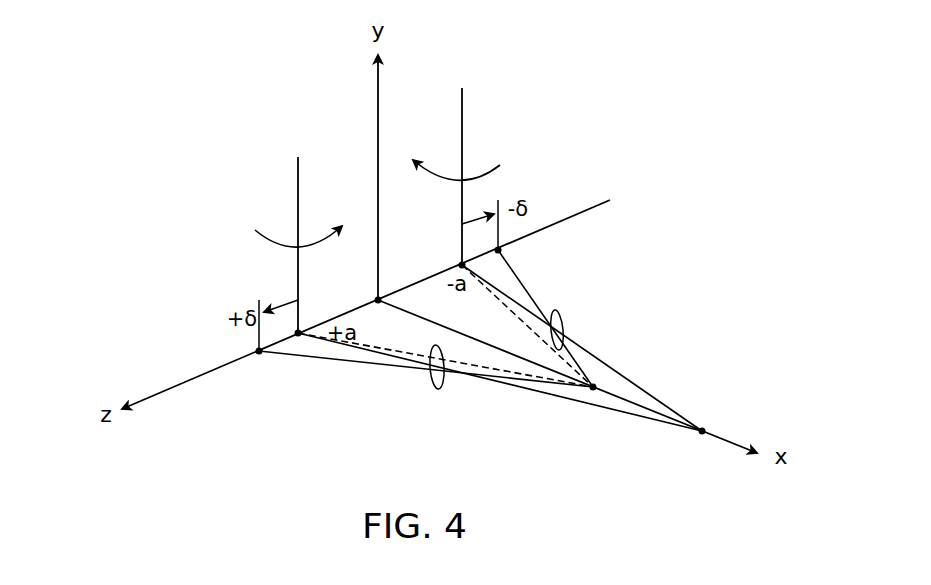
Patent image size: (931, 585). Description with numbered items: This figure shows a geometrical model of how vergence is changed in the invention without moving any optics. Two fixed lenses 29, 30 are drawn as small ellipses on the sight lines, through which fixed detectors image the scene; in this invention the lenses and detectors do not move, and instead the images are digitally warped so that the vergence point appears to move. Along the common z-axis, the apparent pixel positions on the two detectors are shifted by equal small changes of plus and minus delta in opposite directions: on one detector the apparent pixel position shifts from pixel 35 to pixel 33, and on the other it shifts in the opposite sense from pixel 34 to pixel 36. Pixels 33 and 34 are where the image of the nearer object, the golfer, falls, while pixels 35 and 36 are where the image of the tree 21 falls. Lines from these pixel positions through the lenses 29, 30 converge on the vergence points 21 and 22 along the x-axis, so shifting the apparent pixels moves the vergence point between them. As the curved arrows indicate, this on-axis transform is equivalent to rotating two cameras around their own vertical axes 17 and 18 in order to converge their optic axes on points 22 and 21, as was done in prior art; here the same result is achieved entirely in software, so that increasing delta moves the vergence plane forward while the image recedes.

The vertical axis 17 is at (487, 170).
The vertical axis 18 is at (262, 239).
The tree 21 is at (596, 385).
The convergence point 22 is at (703, 430).
The fixed lens 29 is at (565, 330).
The fixed lens 30 is at (437, 390).
The pixel 33 is at (500, 252).
The pixel 34 is at (299, 335).
The pixel 35 is at (458, 264).
The pixel 36 is at (260, 353).